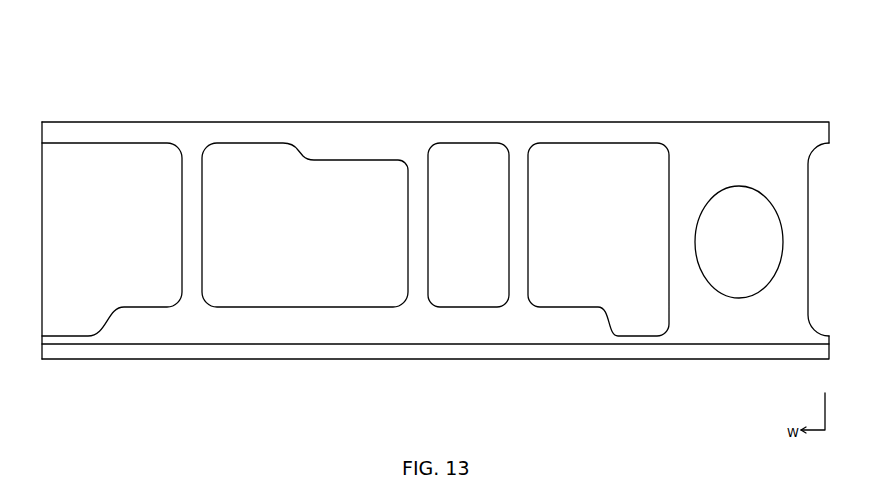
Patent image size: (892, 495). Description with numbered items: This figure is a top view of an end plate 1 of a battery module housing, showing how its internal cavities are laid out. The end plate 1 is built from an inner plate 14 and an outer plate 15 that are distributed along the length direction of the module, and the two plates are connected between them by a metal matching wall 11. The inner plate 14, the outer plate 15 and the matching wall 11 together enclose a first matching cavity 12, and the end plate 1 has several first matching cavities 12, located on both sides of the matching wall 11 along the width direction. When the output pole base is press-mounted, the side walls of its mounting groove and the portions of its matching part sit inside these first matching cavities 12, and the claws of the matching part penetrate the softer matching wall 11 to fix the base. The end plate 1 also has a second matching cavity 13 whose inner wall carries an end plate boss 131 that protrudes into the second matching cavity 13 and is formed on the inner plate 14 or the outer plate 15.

The end plate 1 is at (76, 52).
The matching wall 11 is at (185, 247).
The first matching cavity 12 is at (480, 149).
The second matching cavity 13 is at (217, 298).
The end plate boss 131 is at (340, 159).
The inner plate 14 is at (250, 122).
The outer plate 15 is at (532, 357).